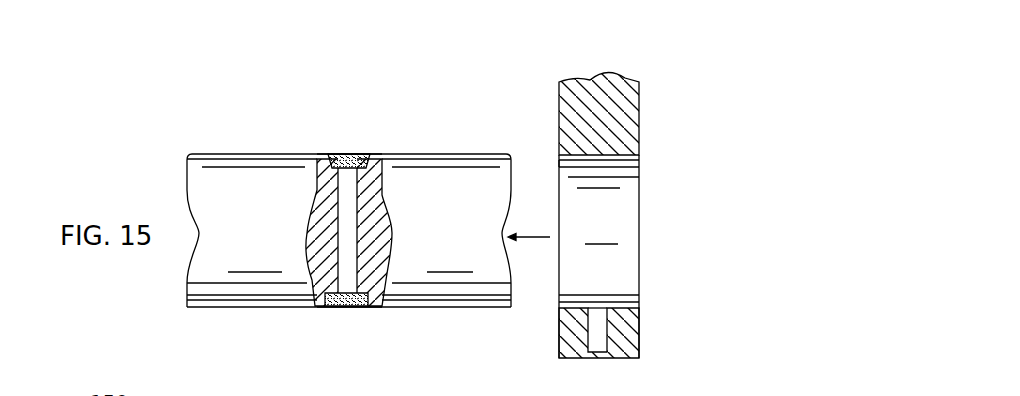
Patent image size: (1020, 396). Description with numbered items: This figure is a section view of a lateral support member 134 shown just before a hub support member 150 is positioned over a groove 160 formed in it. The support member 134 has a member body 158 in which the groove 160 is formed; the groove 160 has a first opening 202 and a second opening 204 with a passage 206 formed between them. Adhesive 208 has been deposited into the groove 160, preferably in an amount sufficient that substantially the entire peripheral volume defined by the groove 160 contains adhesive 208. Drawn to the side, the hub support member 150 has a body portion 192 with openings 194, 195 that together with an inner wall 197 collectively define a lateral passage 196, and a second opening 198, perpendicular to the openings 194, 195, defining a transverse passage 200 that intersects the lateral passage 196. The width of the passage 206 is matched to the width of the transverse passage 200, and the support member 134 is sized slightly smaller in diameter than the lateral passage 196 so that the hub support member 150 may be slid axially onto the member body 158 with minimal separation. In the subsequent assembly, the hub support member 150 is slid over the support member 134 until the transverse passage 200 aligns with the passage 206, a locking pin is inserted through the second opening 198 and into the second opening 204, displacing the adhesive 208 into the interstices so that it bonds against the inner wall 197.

The lateral support member 134 is at (208, 130).
The hub support member 150 is at (640, 42).
The member body 158 is at (462, 153).
The groove 160 is at (326, 143).
The body portion 192 is at (640, 130).
The opening 194 is at (640, 177).
The opening 195 is at (558, 165).
The lateral passage 196 is at (604, 231).
The inner wall 197 is at (587, 155).
The second opening 198 is at (593, 358).
The transverse passage 200 is at (597, 330).
The first opening 202 is at (366, 156).
The second opening 204 is at (348, 296).
The passage 206 is at (347, 249).
The adhesive 208 is at (342, 154).